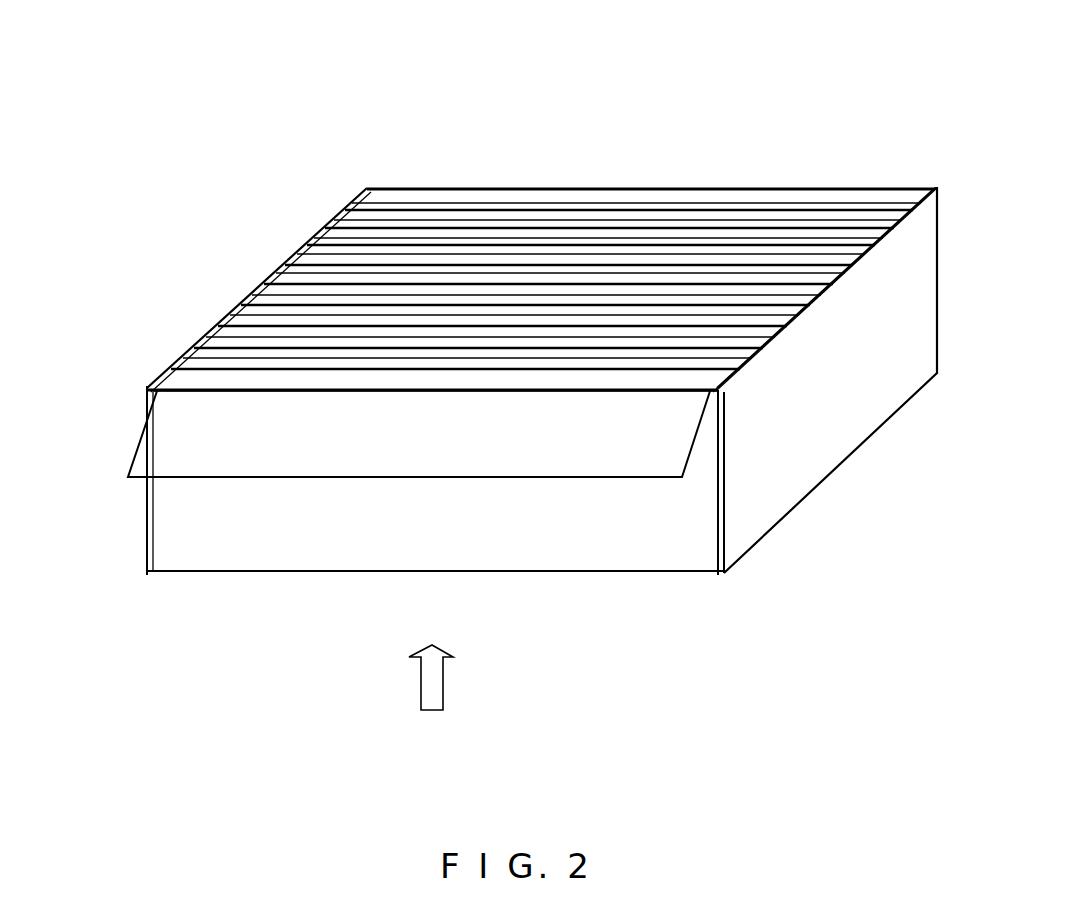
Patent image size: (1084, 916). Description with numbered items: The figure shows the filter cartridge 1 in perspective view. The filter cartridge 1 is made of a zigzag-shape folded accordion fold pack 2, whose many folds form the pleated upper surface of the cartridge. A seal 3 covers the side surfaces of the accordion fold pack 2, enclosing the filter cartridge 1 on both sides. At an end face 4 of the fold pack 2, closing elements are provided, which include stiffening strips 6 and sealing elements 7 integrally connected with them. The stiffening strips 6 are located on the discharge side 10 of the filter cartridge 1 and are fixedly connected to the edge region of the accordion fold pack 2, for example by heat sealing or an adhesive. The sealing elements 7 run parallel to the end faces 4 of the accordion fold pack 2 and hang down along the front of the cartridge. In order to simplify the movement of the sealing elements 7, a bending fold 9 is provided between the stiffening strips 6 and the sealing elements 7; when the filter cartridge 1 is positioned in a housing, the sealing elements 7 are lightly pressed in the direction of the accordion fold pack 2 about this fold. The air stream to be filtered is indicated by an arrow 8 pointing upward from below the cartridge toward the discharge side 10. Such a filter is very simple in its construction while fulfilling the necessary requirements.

The filter cartridge 1 is at (504, 376).
The accordion fold pack 2 is at (525, 238).
The seal 3 is at (838, 413).
The end face 4 is at (348, 538).
The stiffening strip 6 is at (215, 386).
The sealing element 7 is at (165, 455).
The arrow 8 is at (436, 697).
The bending fold 9 is at (188, 392).
The discharge side 10 is at (525, 238).